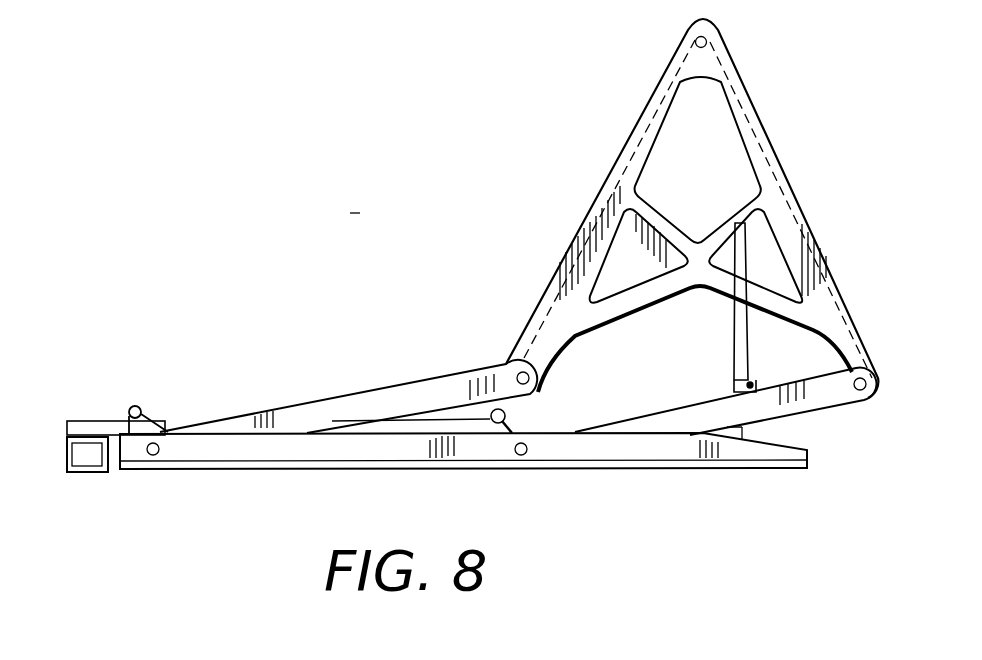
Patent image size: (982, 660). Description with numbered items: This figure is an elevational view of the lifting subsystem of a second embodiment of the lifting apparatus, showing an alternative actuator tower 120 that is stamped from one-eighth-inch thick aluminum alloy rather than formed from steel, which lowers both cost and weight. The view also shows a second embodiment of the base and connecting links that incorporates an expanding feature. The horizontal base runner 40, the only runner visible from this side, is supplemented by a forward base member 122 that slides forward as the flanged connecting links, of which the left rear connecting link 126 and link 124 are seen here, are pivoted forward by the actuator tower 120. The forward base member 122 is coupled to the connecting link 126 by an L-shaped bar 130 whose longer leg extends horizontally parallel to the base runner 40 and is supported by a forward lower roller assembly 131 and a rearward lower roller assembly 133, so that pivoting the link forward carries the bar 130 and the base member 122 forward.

The horizontal base runner 40 is at (248, 453).
The actuator tower 120 is at (586, 187).
The forward base member 122 is at (66, 446).
The front support arm 124 is at (377, 391).
The left rear connecting link 126 is at (677, 404).
The L-shaped bar 130 is at (735, 337).
The forward lower roller assembly 131 is at (138, 398).
The rearward lower roller assembly 133 is at (524, 409).